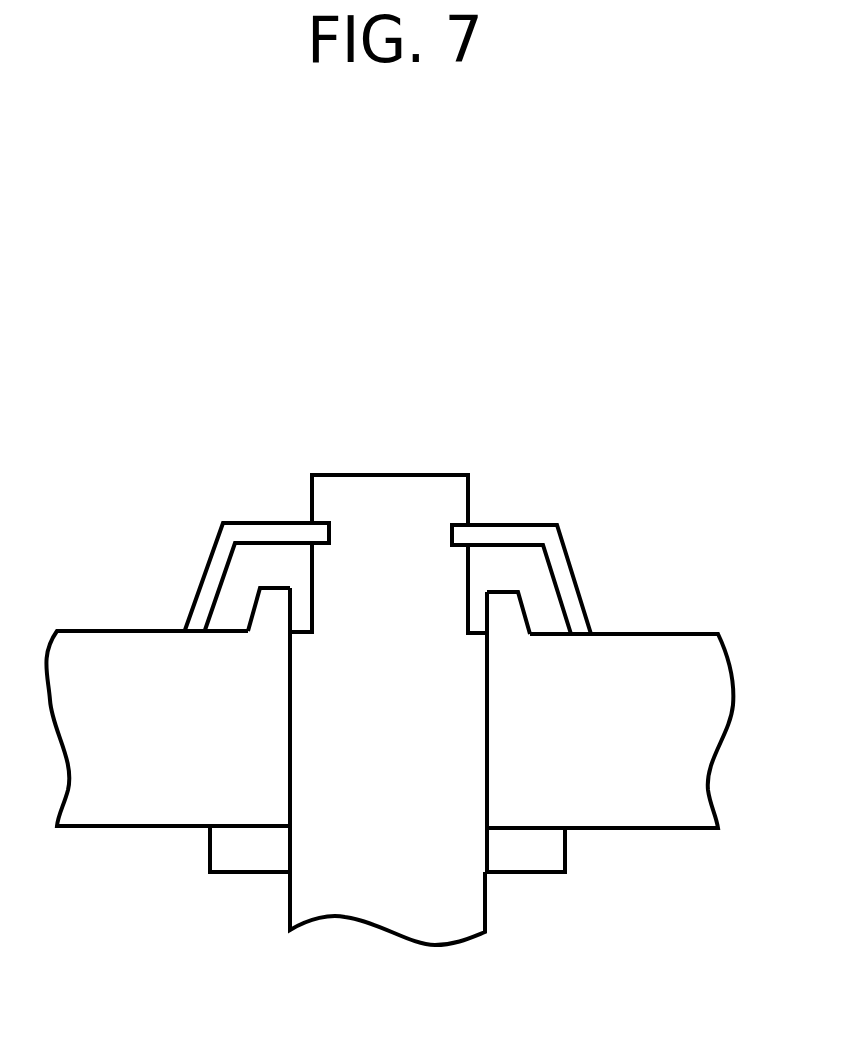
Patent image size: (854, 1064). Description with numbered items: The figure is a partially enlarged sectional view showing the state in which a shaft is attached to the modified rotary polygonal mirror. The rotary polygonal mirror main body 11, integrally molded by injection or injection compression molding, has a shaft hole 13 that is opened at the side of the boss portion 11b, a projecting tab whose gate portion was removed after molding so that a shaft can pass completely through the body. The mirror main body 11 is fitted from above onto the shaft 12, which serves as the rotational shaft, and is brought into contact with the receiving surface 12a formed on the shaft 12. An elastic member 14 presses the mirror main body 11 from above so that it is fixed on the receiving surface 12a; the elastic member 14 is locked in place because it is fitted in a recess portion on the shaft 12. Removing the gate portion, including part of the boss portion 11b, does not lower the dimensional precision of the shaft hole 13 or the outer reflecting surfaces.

The rotary polygonal mirror main body 11 is at (93, 828).
The boss portion 11b is at (508, 611).
The shaft 12 is at (447, 915).
The receiving surface 12a is at (535, 828).
The shaft hole 13 is at (290, 733).
The elastic member 14 is at (512, 535).